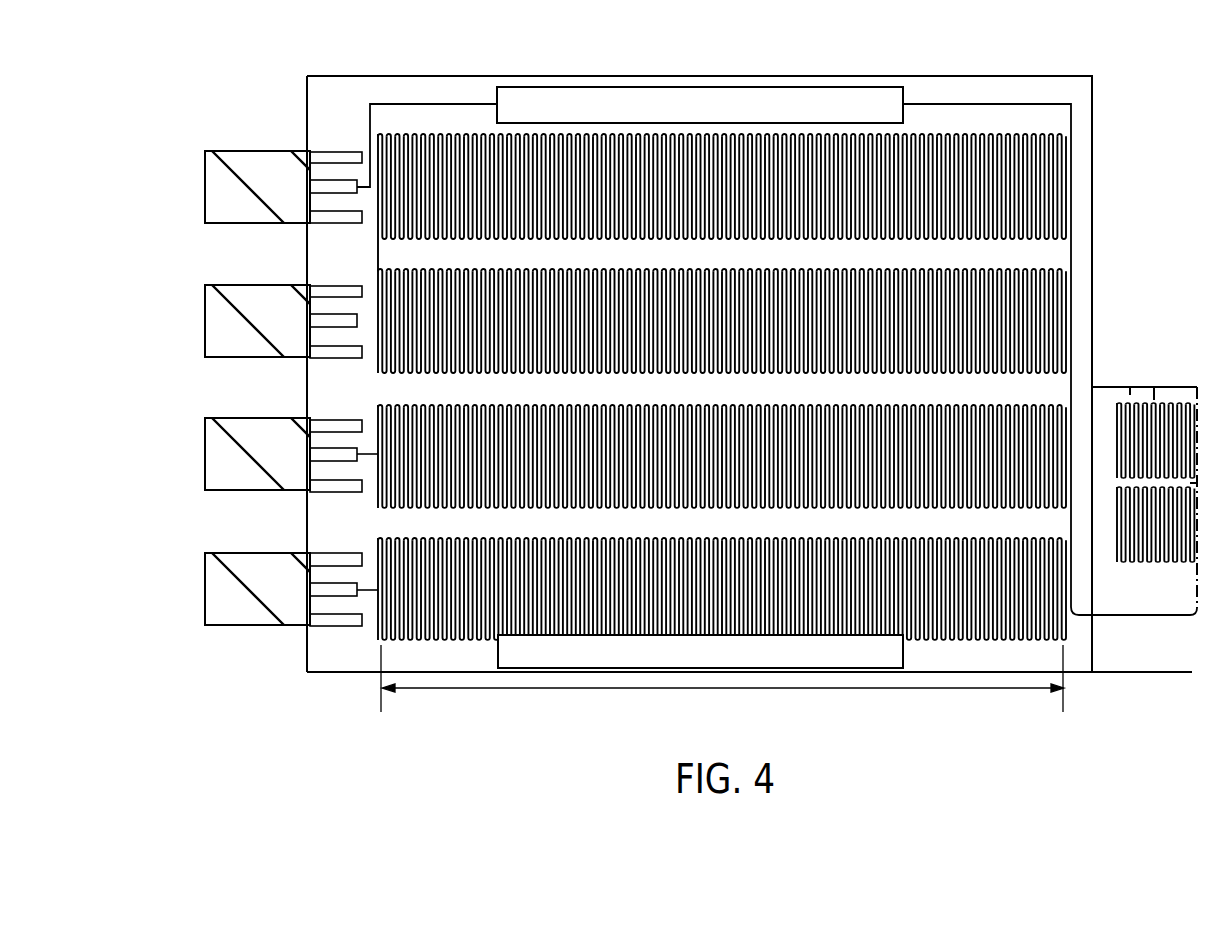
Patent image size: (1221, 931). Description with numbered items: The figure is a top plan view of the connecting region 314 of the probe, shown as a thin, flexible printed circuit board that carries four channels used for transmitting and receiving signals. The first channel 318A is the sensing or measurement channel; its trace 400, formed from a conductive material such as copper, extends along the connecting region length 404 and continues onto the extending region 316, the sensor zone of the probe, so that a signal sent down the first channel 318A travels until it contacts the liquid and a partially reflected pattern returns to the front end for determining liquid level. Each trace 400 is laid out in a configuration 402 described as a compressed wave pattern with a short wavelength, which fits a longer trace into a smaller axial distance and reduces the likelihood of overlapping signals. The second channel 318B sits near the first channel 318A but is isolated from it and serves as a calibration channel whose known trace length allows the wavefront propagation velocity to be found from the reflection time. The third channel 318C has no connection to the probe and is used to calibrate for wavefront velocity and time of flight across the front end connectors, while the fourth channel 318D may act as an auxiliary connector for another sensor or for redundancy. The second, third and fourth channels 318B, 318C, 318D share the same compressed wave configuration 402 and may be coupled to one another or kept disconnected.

The connecting region 314 is at (256, 68).
The extending region 316 is at (1160, 358).
The first channel 318A is at (222, 588).
The second channel 318B is at (222, 455).
The third channel 318C is at (222, 325).
The fourth channel 318D is at (222, 192).
The trace 400 is at (408, 641).
The configuration 402 is at (1078, 673).
The connecting region length 404 is at (733, 690).